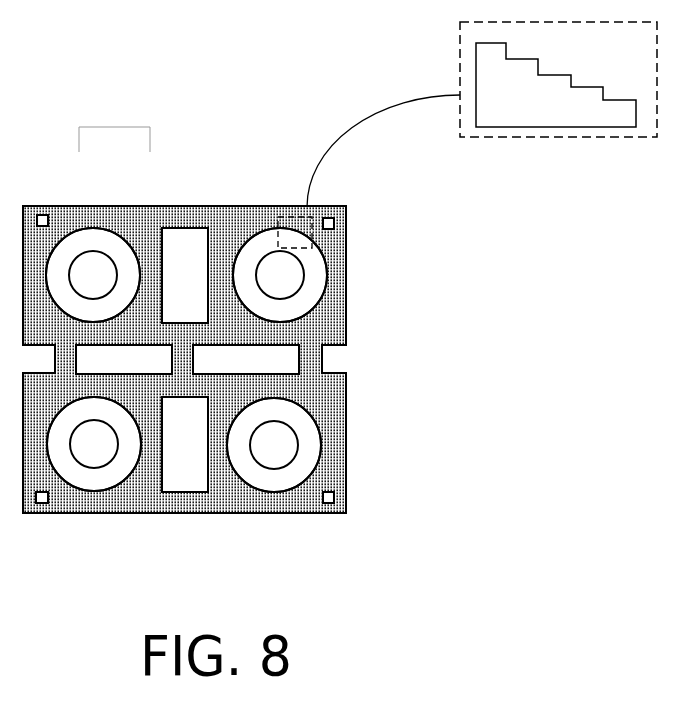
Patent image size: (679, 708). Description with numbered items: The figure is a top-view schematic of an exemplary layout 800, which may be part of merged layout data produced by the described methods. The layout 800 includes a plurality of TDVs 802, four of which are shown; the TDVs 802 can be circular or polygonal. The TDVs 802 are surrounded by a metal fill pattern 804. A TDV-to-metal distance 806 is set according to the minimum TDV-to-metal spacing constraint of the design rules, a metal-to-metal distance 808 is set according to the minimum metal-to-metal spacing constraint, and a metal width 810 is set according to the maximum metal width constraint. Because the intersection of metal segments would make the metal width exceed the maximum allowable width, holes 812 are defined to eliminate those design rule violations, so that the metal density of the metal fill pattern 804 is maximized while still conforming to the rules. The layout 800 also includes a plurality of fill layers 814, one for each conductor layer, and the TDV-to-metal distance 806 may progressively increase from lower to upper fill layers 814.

The layout 800 is at (340, 302).
The TDVs 802 is at (297, 287).
The metal fill pattern 804 is at (347, 298).
The TDV-to-metal distance 806 is at (137, 262).
The metal-to-metal distance 808 is at (203, 253).
The metal width 810 is at (341, 432).
The holes 812 is at (45, 210).
The fill layers 814 is at (548, 116).